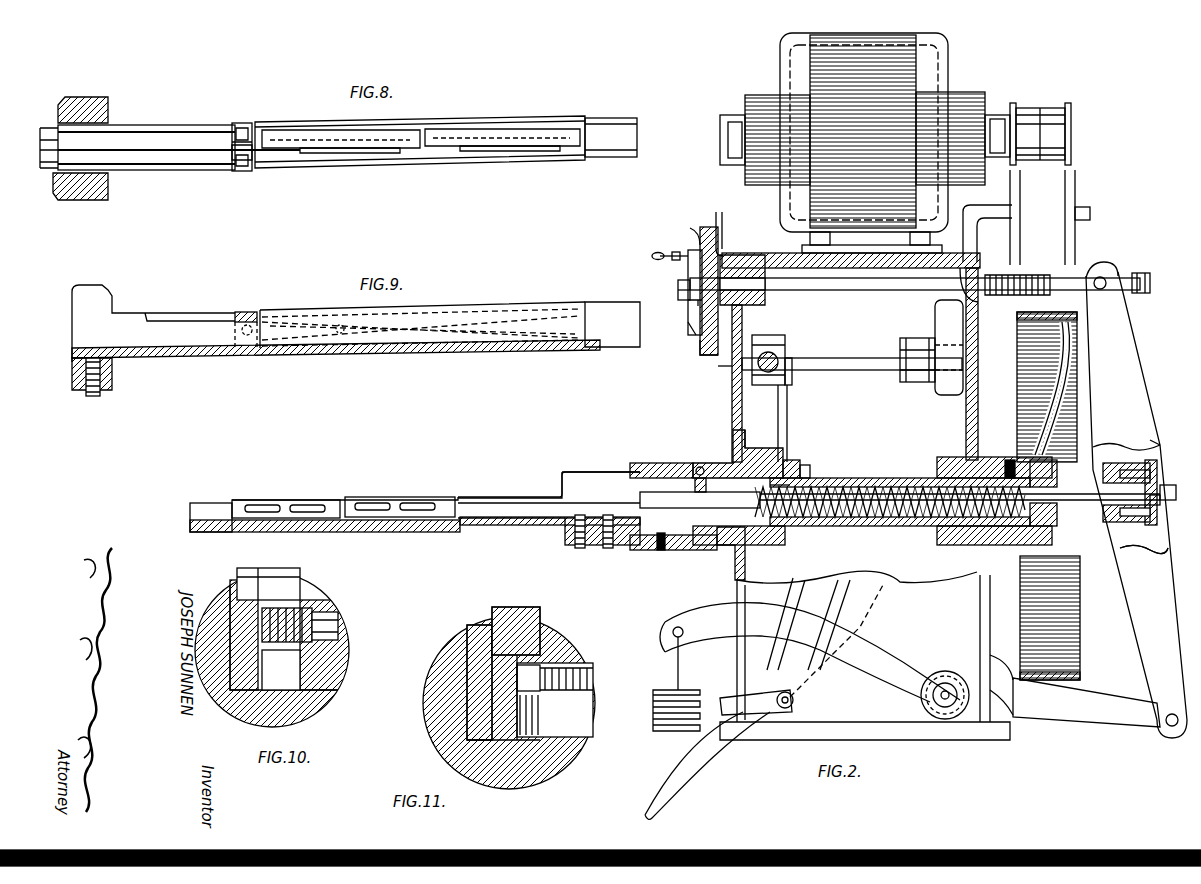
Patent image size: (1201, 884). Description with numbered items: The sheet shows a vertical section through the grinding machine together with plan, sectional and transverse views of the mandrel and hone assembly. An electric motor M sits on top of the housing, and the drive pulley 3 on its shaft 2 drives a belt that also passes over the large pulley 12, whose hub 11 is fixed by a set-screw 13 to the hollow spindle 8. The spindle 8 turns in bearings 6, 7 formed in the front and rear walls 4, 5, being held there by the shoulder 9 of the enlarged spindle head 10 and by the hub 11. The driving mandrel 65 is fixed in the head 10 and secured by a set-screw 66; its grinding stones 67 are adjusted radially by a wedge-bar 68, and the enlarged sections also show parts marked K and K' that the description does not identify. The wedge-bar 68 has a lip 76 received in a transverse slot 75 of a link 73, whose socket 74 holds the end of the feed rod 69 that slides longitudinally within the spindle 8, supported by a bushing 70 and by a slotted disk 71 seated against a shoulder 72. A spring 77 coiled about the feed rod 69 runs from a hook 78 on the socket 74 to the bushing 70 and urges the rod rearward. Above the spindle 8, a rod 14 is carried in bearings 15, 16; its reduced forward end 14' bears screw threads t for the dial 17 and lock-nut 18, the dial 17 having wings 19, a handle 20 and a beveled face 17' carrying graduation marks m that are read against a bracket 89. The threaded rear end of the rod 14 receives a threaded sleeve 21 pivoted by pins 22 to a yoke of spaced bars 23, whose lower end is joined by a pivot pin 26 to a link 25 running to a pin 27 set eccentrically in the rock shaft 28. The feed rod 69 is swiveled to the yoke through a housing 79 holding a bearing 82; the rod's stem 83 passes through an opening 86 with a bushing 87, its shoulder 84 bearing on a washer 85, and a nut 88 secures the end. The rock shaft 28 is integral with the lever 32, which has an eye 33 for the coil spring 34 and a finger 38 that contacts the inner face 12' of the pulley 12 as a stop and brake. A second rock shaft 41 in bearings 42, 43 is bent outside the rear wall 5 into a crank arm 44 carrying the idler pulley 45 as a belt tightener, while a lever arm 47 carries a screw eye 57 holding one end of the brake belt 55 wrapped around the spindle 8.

In FIG. 2, the electric motor M is at (870, 119).
In FIG. 2, the shaft 2 is at (1003, 133).
In FIG. 2, the drive pulley 3 is at (1069, 131).
In FIG. 2, the idler pulley 45 is at (1079, 210).
In FIG. 2, the crank arm 44 is at (981, 218).
In FIG. 2, the bearing 16 is at (982, 266).
In FIG. 2, the forward end of rod 14' is at (851, 245).
In FIG. 2, the bracket 89 is at (718, 223).
In FIG. 2, the bearing 15 is at (756, 305).
In FIG. 2, the rod 14 is at (915, 296).
In FIG. 2, the dial 17 is at (700, 282).
In FIG. 2, the graduation marks m is at (688, 232).
In FIG. 2, the wings 19 is at (688, 252).
In FIG. 2, the lock-nut 18 is at (678, 290).
In FIG. 2, the handle 20 is at (655, 253).
In FIG. 2, the screw threads t is at (698, 303).
In FIG. 2, the beveled face 17' is at (689, 365).
In FIG. 2, the bearing 42 is at (732, 371).
In FIG. 2, the front wall 4 is at (732, 386).
In FIG. 2, the rock shaft 41 is at (848, 357).
In FIG. 2, the lever arm 47 is at (775, 355).
In FIG. 2, the screw eye 57 is at (788, 372).
In FIG. 2, the bearing 43 is at (923, 336).
In FIG. 2, the rear wall 5 is at (980, 404).
In FIG. 2, the inner face of pulley 12' is at (1034, 387).
In FIG. 2, the bearing 7 is at (957, 457).
In FIG. 2, the set-screw 13 is at (1010, 460).
In FIG. 2, the threaded sleeve 21 is at (1085, 270).
In FIG. 2, the pins 22 is at (1100, 292).
In FIG. 2, the spaced bar 23 is at (1133, 413).
In FIG. 2, the pivot pin 26 is at (1170, 727).
In FIG. 2, the washer 85 is at (1153, 450).
In FIG. 2, the housing 79 is at (1132, 468).
In FIG. 2, the bearing 82 is at (1116, 473).
In FIG. 2, the stem 83 is at (1160, 472).
In FIG. 2, the shoulder 84 is at (1137, 516).
In FIG. 2, the nut 88 is at (1174, 490).
In FIG. 2, the bushing 87 is at (1163, 500).
In FIG. 2, the opening 86 is at (1153, 540).
In FIG. 2, the spindle head 10 is at (663, 463).
In FIG. 2, the shoulder 9 is at (707, 463).
In FIG. 2, the bearing 6 is at (763, 462).
In FIG. 2, the link 73 is at (697, 467).
In FIG. 2, the hook 78 is at (780, 483).
In FIG. 2, the feed rod 69 is at (792, 465).
In FIG. 2, the belt 55 is at (803, 468).
In FIG. 2, the hollow spindle 8 is at (867, 476).
In FIG. 2, the spring 77 is at (877, 520).
In FIG. 2, the lip 76 is at (695, 508).
In FIG. 2, the transverse slot 75 is at (685, 488).
In FIG. 2, the socket 74 is at (750, 544).
In FIG. 2, the shoulder 72 is at (708, 547).
In FIG. 2, the slotted disk 71 is at (683, 545).
In FIG. 2, the bushing 70 is at (1070, 510).
In FIG. 2, the hub 11 is at (1003, 545).
In FIG. 2, the pulley 12 is at (1064, 618).
In FIG. 8, the driving mandrel 65 is at (388, 163).
In FIG. 9, the driving mandrel 65 is at (393, 351).
In FIG. 10, the driving mandrel 65 is at (335, 693).
In FIG. 11, the driving mandrel 65 is at (440, 736).
In FIG. 2, the driving mandrel 65 is at (422, 530).
In FIG. 8, the grinding stones 67 is at (322, 136).
In FIG. 9, the grinding stones 67 is at (332, 313).
In FIG. 11, the grinding stones 67 is at (510, 608).
In FIG. 2, the grinding stones 67 is at (307, 501).
In FIG. 8, the wedge-bar 68 is at (175, 156).
In FIG. 11, the wedge-bar 68 is at (477, 667).
In FIG. 2, the wedge-bar 68 is at (519, 505).
In FIG. 9, the set-screw 66 is at (95, 397).
In FIG. 2, the set-screw 66 is at (579, 548).
In FIG. 8, the key K is at (240, 168).
In FIG. 9, the key K is at (246, 304).
In FIG. 10, the key K is at (265, 617).
In FIG. 9, the key screw K' is at (242, 355).
In FIG. 10, the key screw K' is at (310, 628).
In FIG. 2, the lever 32 is at (898, 643).
In FIG. 2, the eye 33 is at (673, 638).
In FIG. 2, the coil spring 34 is at (653, 726).
In FIG. 2, the pin 27 is at (942, 688).
In FIG. 2, the rock shaft 28 is at (940, 707).
In FIG. 2, the finger 38 is at (1005, 658).
In FIG. 2, the link 25 is at (1128, 717).